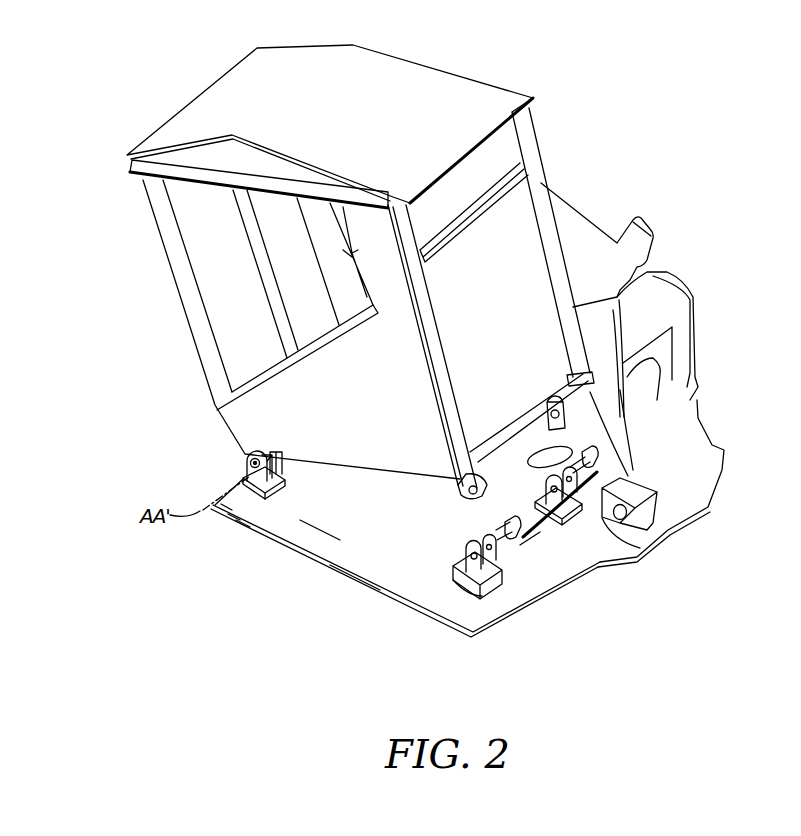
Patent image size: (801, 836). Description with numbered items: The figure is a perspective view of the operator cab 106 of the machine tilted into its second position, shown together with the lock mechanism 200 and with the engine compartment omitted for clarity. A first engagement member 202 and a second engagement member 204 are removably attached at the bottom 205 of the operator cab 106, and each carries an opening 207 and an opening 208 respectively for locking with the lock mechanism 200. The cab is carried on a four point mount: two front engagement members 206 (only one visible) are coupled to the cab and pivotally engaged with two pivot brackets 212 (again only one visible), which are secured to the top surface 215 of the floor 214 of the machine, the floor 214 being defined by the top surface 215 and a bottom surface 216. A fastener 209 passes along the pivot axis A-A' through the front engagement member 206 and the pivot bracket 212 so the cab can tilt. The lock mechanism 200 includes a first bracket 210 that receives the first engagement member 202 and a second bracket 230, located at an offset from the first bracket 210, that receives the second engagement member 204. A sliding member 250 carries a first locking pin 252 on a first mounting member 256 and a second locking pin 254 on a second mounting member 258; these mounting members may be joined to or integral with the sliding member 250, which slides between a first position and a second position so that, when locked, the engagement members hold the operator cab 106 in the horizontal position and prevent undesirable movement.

The operator cab 106 is at (170, 86).
The lock mechanism 200 is at (573, 545).
The first engagement member 202 is at (460, 482).
The second engagement member 204 is at (540, 420).
The bottom 205 is at (323, 490).
The front engagement member 206 is at (283, 480).
The opening 207 is at (467, 487).
The opening 208 is at (545, 435).
The fastener 209 is at (250, 462).
The first bracket 210 is at (492, 595).
The pivot bracket 212 is at (234, 520).
The floor 214 is at (240, 519).
The top surface 215 is at (350, 550).
The bottom surface 216 is at (241, 526).
The second bracket 230 is at (582, 517).
The sliding member 250 is at (547, 538).
The first locking pin 252 is at (489, 532).
The second locking pin 254 is at (580, 478).
The first mounting member 256 is at (530, 546).
The second mounting member 258 is at (598, 472).